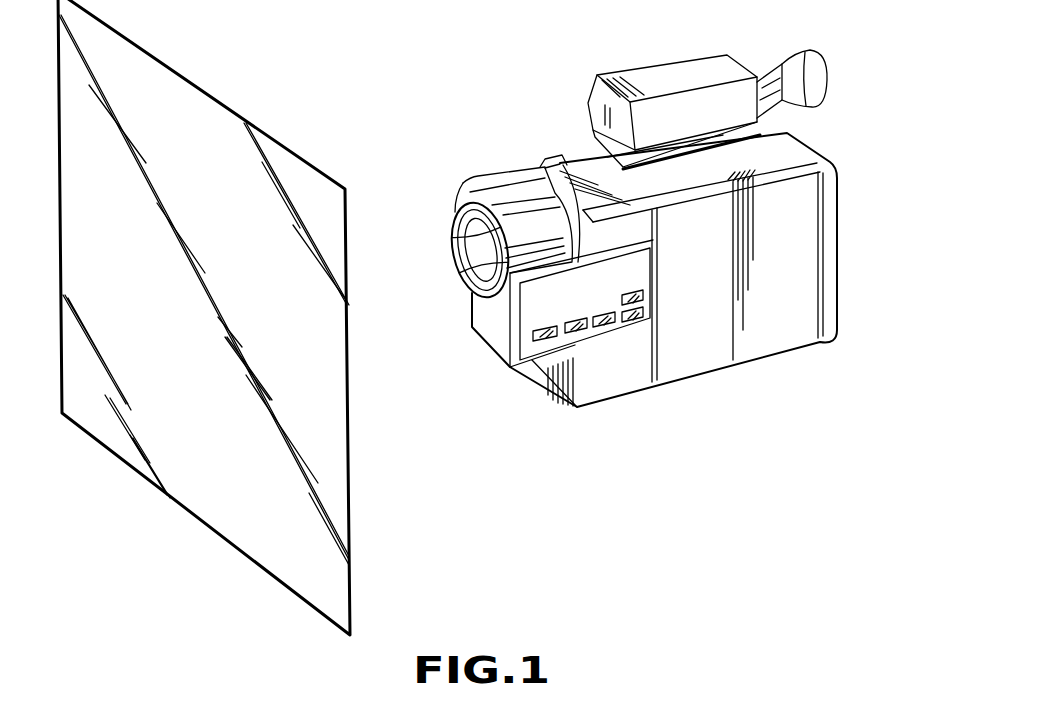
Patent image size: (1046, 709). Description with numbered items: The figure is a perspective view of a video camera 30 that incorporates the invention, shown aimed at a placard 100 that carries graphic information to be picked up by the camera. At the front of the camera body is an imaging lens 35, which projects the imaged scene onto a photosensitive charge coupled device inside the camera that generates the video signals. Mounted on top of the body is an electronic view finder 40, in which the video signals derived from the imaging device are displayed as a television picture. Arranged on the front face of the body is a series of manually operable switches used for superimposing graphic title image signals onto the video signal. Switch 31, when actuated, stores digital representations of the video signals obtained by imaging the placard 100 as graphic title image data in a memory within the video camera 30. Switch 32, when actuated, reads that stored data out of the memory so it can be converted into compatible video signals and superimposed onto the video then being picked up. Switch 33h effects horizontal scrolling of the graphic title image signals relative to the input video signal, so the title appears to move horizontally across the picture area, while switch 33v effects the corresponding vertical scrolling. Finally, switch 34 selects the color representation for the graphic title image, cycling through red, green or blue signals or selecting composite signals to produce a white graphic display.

The placard 100 is at (333, 492).
The video camera 30 is at (515, 138).
The electronic view finder 40 is at (657, 75).
The imaging lens 35 is at (463, 248).
The switch 31 is at (545, 341).
The switch 32 is at (575, 333).
The switch 34 is at (603, 327).
The switch 33v is at (633, 322).
The switch 33h is at (643, 298).